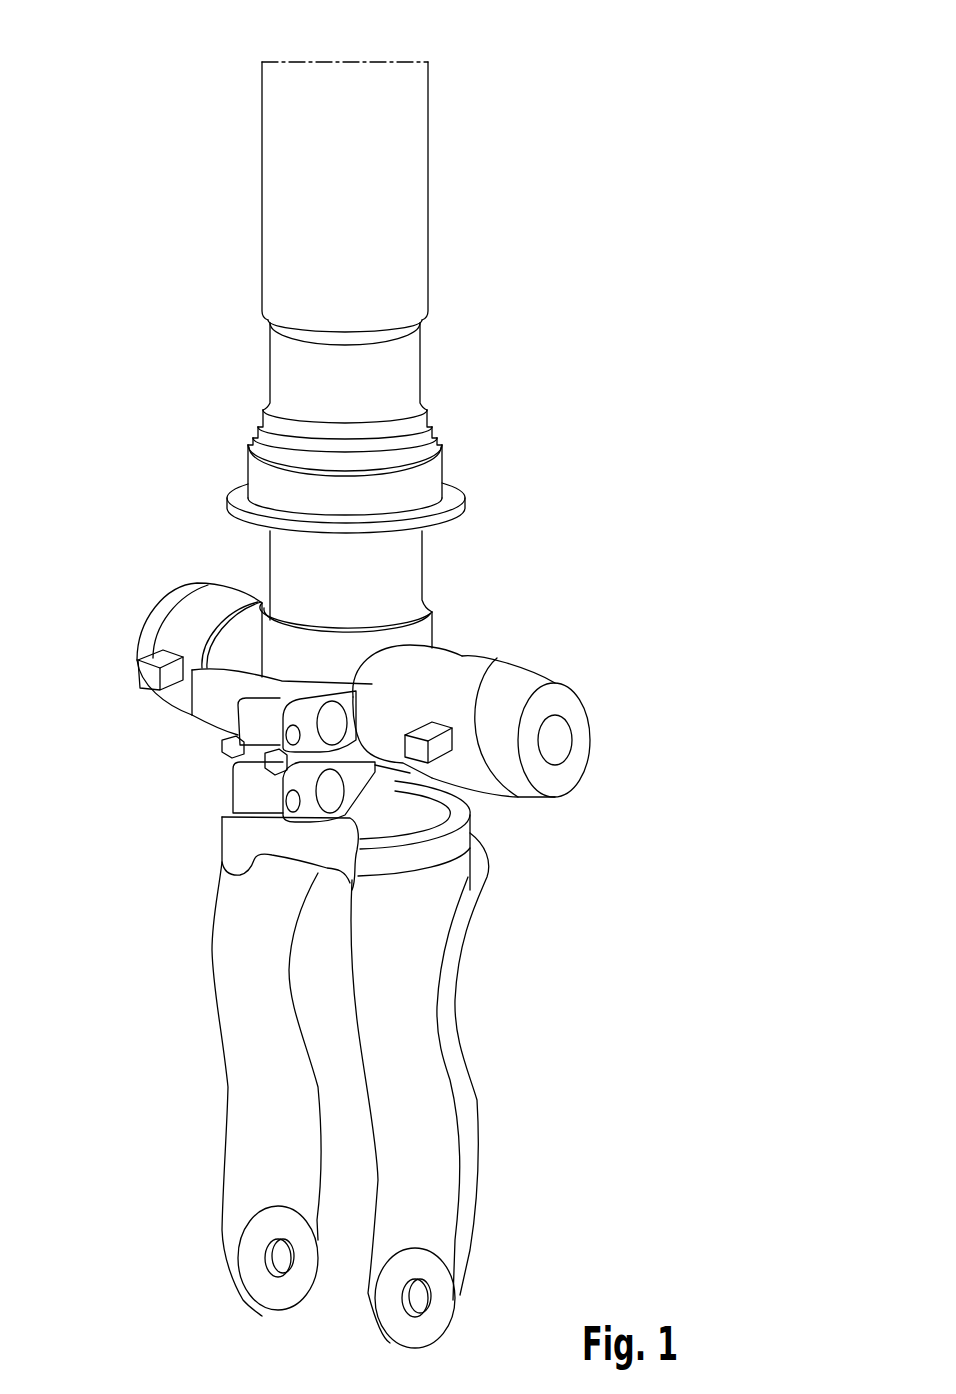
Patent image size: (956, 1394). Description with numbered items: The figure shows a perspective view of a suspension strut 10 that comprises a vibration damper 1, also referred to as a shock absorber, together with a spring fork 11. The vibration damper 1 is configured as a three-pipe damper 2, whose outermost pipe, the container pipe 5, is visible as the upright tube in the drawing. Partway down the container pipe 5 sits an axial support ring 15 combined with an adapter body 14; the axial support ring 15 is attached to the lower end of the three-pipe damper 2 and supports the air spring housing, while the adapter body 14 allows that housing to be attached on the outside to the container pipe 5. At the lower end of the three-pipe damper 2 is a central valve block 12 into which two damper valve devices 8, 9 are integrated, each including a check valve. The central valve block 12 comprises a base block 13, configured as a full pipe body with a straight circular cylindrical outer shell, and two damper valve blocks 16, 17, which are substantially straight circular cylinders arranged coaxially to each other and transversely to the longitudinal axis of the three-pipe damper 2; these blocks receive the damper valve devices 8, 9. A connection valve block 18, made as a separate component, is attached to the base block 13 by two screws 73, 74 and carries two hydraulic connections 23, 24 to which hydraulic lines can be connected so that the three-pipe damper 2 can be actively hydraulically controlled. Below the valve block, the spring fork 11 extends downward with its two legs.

The vibration damper 1 is at (461, 87).
The three-pipe damper 2 is at (430, 257).
The container pipe 5 is at (425, 366).
The damper valve device 8 is at (172, 582).
The damper valve device 9 is at (584, 691).
The suspension strut 10 is at (543, 903).
The spring fork 11 is at (470, 1105).
The central valve block 12 is at (430, 617).
The base block 13 is at (390, 647).
The adapter body 14 is at (443, 478).
The axial support ring 15 is at (468, 503).
The damper valve block 16 is at (233, 641).
The damper valve block 17 is at (415, 680).
The connection valve block 18 is at (270, 762).
The hydraulic connection 23 is at (330, 723).
The hydraulic connection 24 is at (330, 790).
The screw 73 is at (225, 752).
The screw 74 is at (220, 778).